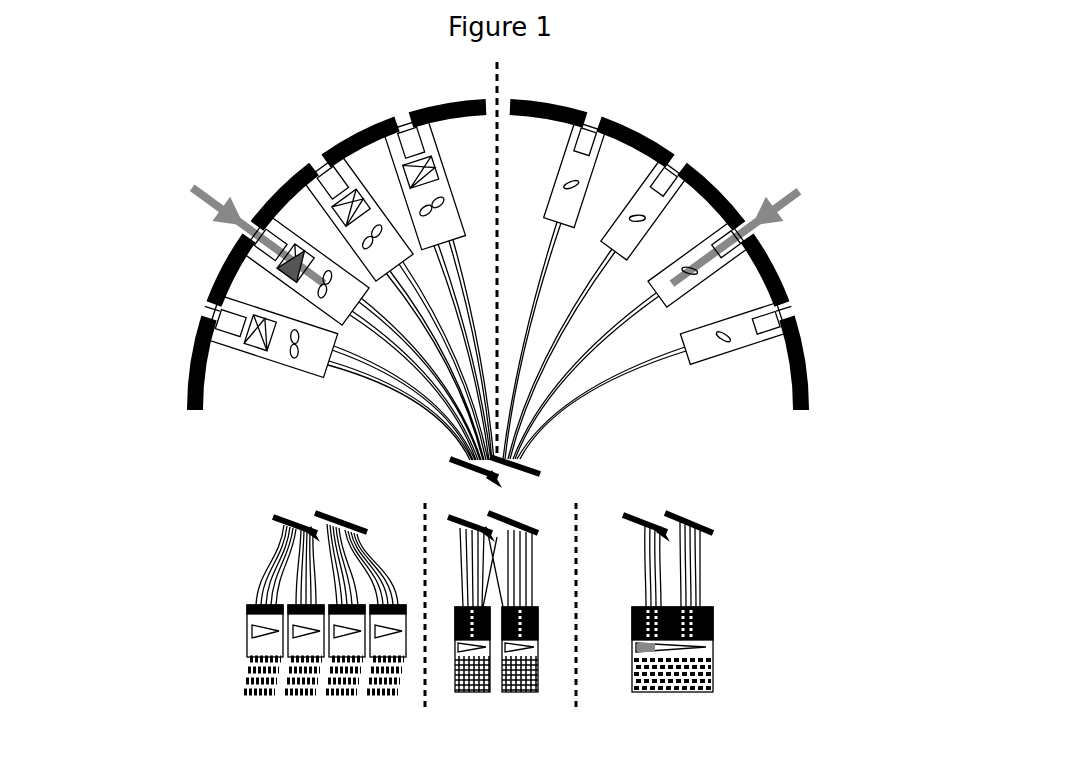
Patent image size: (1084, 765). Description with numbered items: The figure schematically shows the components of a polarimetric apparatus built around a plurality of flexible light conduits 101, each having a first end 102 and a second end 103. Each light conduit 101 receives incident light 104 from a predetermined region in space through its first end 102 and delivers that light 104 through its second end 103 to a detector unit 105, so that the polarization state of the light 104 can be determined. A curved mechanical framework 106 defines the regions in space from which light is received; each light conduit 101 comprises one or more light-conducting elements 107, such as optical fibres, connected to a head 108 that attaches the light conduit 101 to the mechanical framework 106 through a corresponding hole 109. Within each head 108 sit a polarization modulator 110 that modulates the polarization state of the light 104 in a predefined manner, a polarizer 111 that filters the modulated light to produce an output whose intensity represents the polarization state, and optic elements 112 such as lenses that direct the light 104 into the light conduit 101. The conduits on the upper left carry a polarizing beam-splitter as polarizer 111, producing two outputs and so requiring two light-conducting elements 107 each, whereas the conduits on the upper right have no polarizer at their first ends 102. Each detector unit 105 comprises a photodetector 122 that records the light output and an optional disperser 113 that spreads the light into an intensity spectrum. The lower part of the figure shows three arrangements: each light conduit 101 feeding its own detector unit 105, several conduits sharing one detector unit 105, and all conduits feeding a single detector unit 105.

The flexible light conduit 101 is at (431, 97).
The first end 102 is at (733, 372).
The second end 103 is at (238, 540).
The incident light 104 is at (199, 198).
The detector unit 105 is at (498, 667).
The mechanical framework 106 is at (807, 370).
The light-conducting element 107 is at (392, 367).
The head 108 is at (496, 368).
The hole 109 is at (205, 317).
The polarization modulator 110 is at (280, 237).
The polarizer 111 is at (303, 250).
The optic element 112 is at (323, 282).
The disperser 113 is at (388, 641).
The photodetector 122 is at (244, 659).